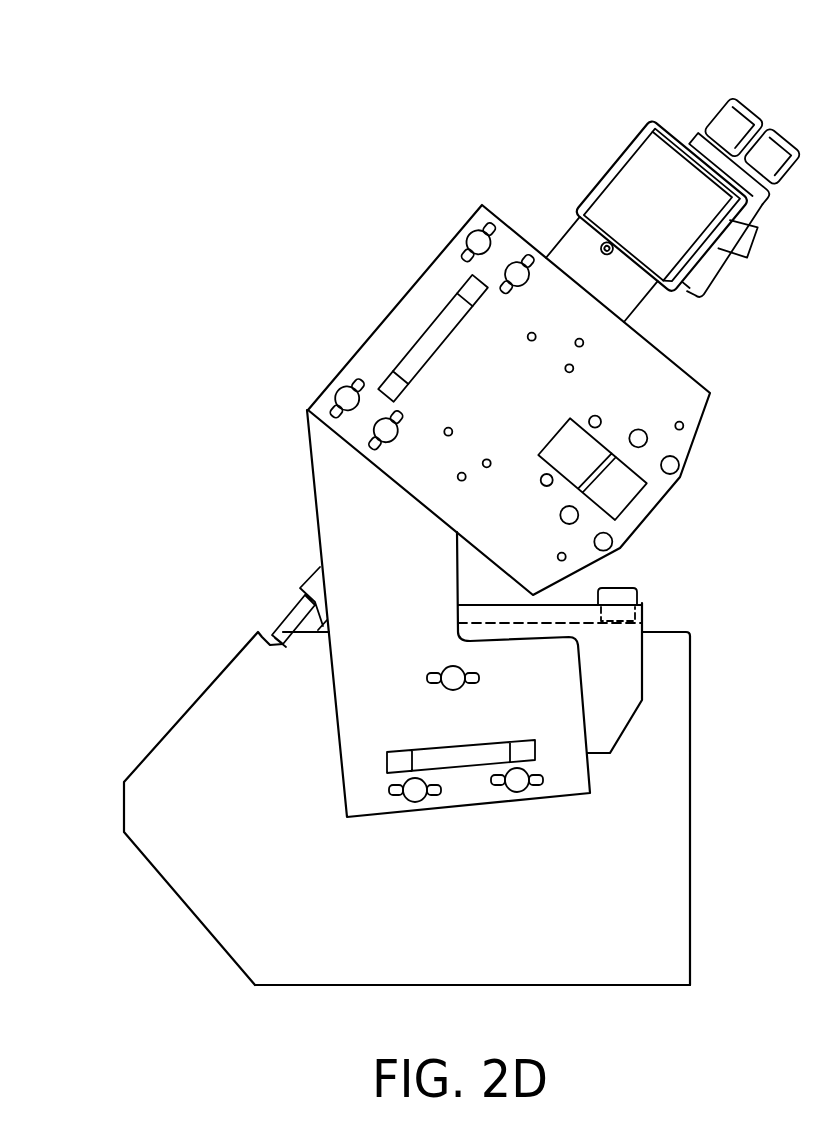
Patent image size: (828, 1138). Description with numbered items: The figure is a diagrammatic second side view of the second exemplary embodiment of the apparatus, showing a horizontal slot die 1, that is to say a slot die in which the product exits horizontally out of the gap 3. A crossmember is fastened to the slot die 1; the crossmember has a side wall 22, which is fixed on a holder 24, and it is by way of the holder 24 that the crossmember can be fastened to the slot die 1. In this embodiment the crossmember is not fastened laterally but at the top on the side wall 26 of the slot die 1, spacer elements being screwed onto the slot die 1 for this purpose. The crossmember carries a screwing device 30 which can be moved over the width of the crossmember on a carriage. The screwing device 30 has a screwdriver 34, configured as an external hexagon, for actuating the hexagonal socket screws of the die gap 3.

The slot die 1 is at (303, 987).
The gap 3 is at (122, 808).
The side wall 22 is at (622, 391).
The holder 24 is at (406, 572).
The side wall of the slot die 26 is at (673, 912).
The screwing device 30 is at (733, 100).
The screwdriver 34 is at (293, 615).